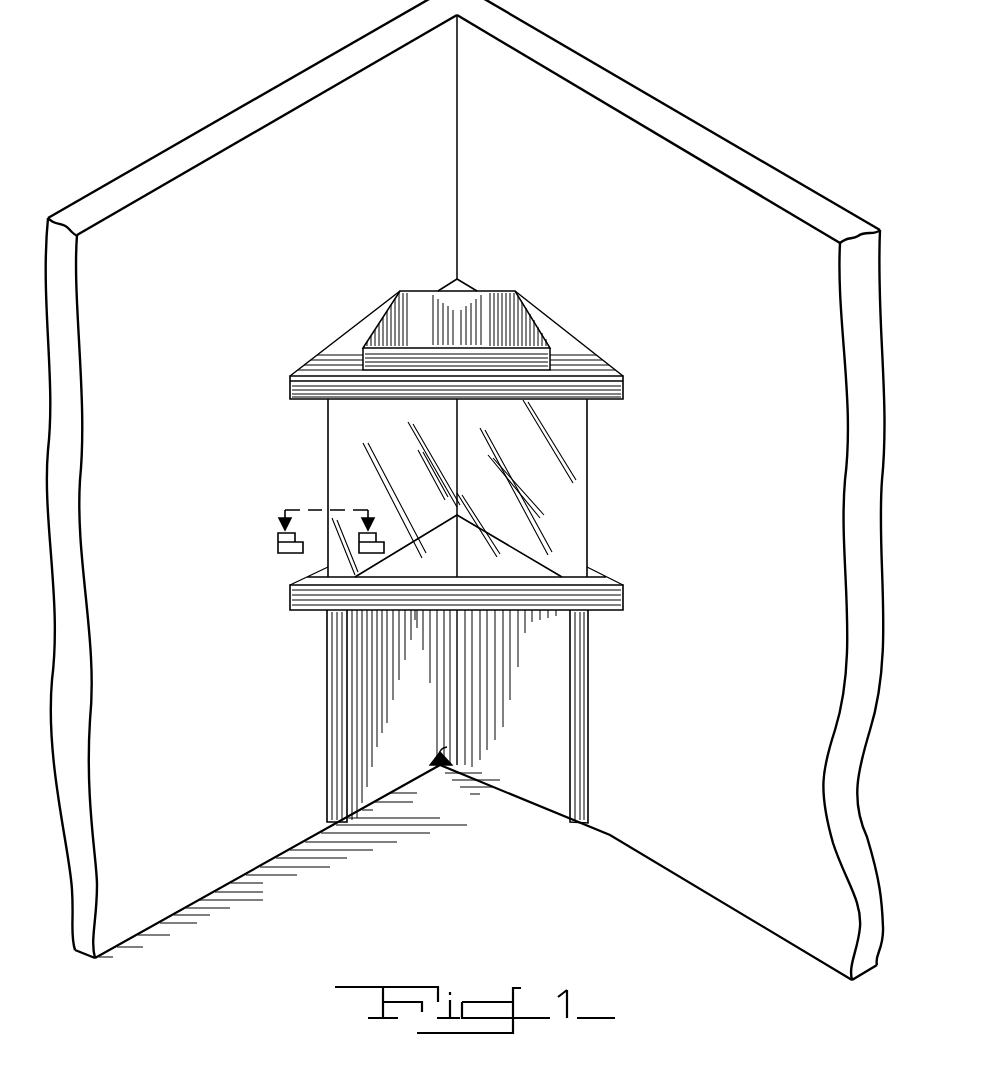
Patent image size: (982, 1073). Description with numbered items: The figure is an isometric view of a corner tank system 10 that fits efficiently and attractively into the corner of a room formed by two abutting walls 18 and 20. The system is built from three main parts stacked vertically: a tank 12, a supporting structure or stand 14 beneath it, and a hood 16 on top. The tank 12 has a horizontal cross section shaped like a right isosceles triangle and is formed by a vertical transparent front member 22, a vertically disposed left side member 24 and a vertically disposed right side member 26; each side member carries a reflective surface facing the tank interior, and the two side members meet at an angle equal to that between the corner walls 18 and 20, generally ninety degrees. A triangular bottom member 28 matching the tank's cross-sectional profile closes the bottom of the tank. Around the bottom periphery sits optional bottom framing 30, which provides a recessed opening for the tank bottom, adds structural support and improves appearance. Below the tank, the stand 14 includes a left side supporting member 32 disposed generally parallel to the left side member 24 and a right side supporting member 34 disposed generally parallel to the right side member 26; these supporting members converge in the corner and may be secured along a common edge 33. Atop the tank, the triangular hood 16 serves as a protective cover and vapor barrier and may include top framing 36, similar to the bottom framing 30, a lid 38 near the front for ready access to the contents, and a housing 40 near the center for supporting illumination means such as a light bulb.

The tank system 10 is at (250, 478).
The tank 12 is at (402, 462).
The supporting structure 14 is at (409, 727).
The hood 16 is at (560, 358).
The wall 18 is at (143, 210).
The wall 20 is at (665, 157).
The front member 22 is at (577, 517).
The left side member 24 is at (327, 463).
The right side member 26 is at (588, 470).
The bottom member 28 is at (503, 563).
The bottom framing 30 is at (617, 593).
The left side supporting member 32 is at (340, 695).
The common edge 33 is at (441, 766).
The right side supporting member 34 is at (582, 667).
The top framing 36 is at (617, 387).
The lid 38 is at (361, 360).
The housing 40 is at (533, 333).